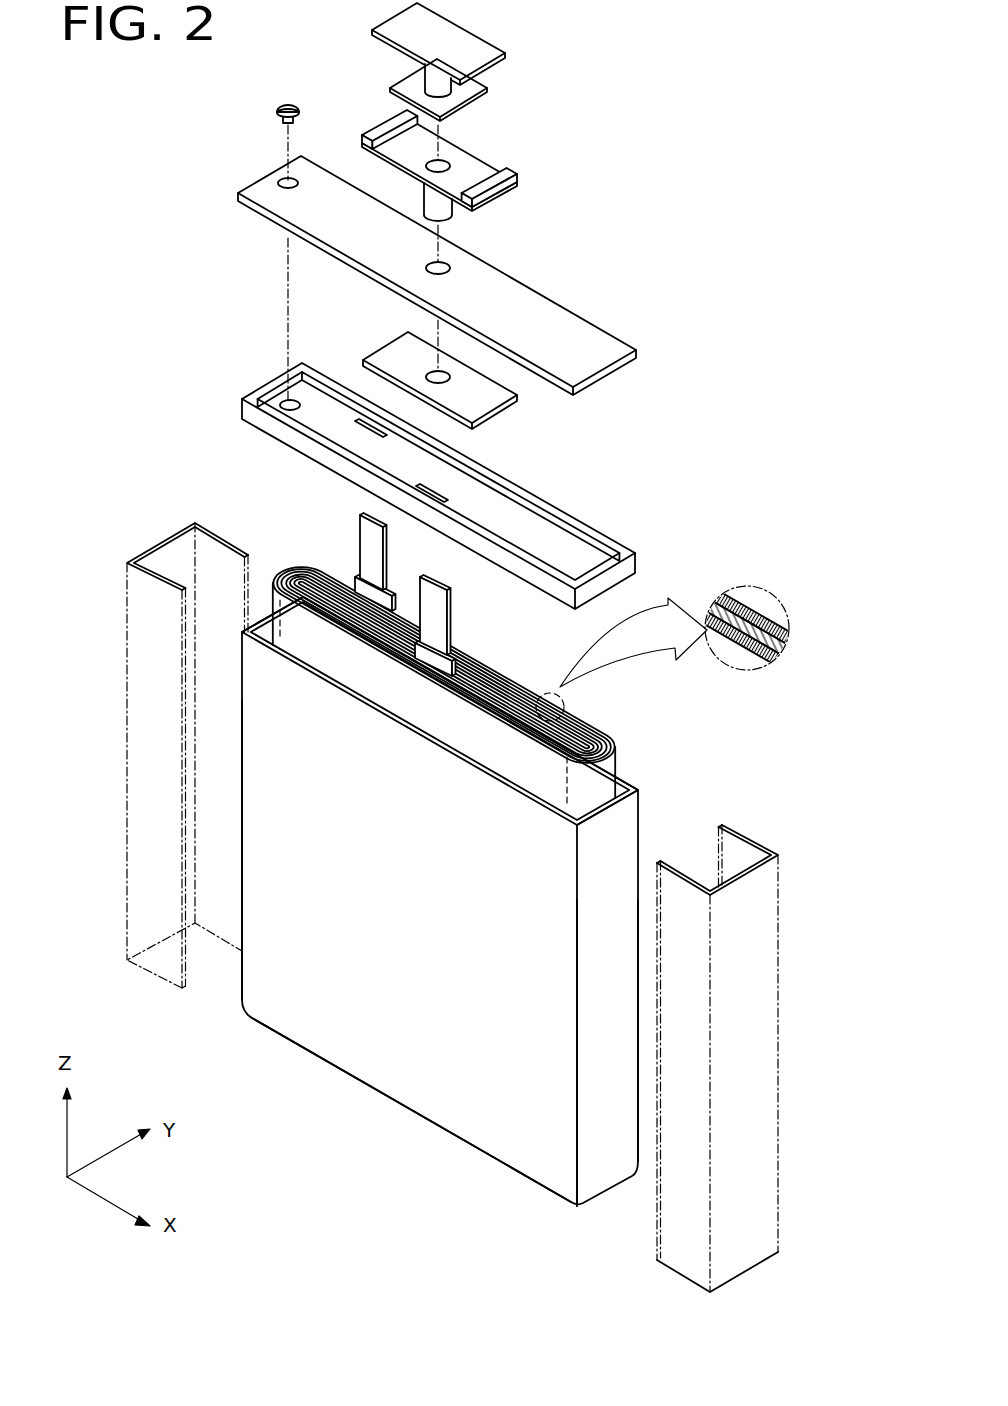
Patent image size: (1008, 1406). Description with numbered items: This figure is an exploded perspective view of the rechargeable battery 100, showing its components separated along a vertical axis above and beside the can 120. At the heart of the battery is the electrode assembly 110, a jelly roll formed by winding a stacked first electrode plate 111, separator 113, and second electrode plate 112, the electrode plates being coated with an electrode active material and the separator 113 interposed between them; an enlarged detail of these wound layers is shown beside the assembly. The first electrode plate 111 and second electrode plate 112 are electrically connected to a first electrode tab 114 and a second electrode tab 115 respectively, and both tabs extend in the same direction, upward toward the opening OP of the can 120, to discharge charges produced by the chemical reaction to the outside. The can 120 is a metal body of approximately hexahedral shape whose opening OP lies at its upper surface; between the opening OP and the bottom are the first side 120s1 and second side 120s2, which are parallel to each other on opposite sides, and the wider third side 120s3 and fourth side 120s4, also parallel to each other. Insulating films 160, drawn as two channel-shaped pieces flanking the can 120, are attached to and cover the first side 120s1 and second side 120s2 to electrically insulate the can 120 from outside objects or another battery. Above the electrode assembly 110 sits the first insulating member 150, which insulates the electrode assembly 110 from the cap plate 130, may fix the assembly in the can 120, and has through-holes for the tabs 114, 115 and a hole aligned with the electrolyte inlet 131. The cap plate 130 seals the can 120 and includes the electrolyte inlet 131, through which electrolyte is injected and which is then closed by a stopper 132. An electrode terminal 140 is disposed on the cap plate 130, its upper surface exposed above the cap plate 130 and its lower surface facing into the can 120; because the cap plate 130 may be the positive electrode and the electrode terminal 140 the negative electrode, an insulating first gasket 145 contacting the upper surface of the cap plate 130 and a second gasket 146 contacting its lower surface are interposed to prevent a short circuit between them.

The rechargeable battery 100 is at (733, 49).
The electrode assembly 110 is at (490, 686).
The first electrode plate 111 is at (768, 655).
The second electrode plate 112 is at (784, 617).
The separator 113 is at (781, 635).
The first electrode tab 114 is at (473, 625).
The second electrode tab 115 is at (346, 562).
The can 120 is at (428, 928).
The first side 120s1 is at (187, 883).
The second side 120s2 is at (611, 1080).
The third side 120s3 is at (411, 1110).
The fourth side 120s4 is at (514, 711).
The cap plate 130 is at (443, 275).
The electrolyte inlet 131 is at (256, 158).
The stopper 132 is at (274, 92).
The electrode terminal 140 is at (461, 62).
The first gasket 145 is at (455, 165).
The second gasket 146 is at (409, 370).
The first insulating member 150 is at (477, 486).
The insulating film 160 is at (458, 907).
The opening OP is at (272, 565).